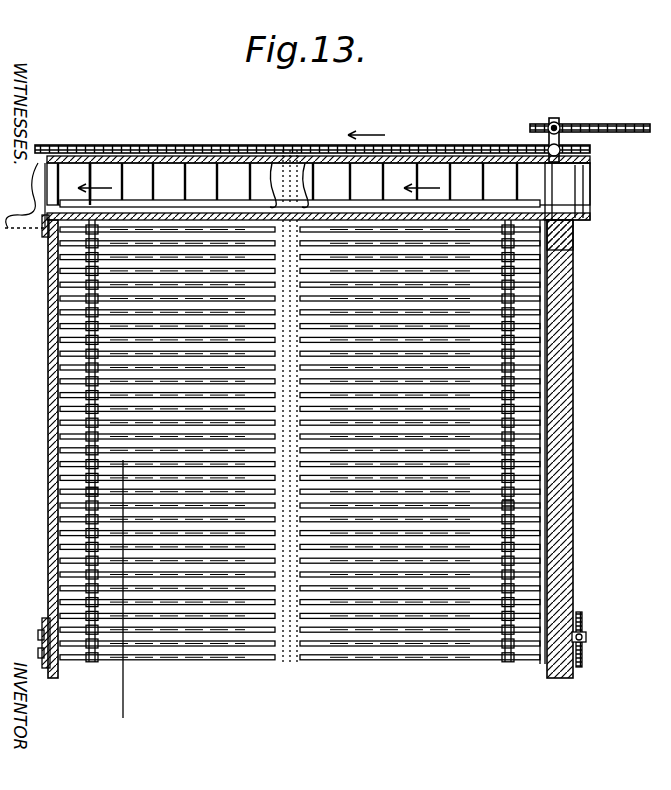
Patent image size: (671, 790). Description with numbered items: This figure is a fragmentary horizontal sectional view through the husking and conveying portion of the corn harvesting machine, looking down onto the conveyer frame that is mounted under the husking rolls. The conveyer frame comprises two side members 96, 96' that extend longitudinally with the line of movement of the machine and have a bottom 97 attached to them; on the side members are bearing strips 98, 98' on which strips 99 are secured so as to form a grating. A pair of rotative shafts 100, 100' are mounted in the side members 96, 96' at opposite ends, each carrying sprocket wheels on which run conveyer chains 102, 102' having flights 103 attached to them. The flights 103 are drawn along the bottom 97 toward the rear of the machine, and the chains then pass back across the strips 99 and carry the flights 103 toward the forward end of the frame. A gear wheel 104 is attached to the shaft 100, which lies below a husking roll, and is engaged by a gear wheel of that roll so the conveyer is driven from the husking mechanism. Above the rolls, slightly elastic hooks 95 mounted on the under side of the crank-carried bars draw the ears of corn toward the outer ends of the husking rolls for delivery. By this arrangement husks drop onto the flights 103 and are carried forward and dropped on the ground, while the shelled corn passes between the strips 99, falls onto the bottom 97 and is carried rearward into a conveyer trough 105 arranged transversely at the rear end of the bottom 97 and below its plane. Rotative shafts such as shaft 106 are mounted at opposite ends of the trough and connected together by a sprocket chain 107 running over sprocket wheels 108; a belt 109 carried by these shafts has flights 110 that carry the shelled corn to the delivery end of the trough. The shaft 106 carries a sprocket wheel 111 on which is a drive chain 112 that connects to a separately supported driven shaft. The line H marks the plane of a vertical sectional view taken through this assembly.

The elastic hooks 95 is at (36, 198).
The side member 96 is at (580, 449).
The side member 96' is at (33, 449).
The bottom 97 is at (340, 660).
The bearing strip 98 is at (559, 441).
The bearing strip 98' is at (51, 441).
The strips 99 is at (545, 412).
The rotative shaft 100 is at (537, 665).
The rotative shaft 100' is at (590, 235).
The conveyer chain 102 is at (564, 523).
The conveyer chain 102' is at (51, 481).
The flights 103 is at (528, 340).
The gear wheel 104 is at (582, 665).
The conveyer trough 105 is at (202, 160).
The rotative shaft 106 is at (554, 120).
The sprocket chain 107 is at (252, 156).
The sprocket wheel 108 is at (548, 150).
The belt 109 is at (97, 165).
The flights 110 is at (322, 182).
The sprocket wheel 111 is at (548, 126).
The drive chain 112 is at (600, 124).
The section line H is at (123, 718).